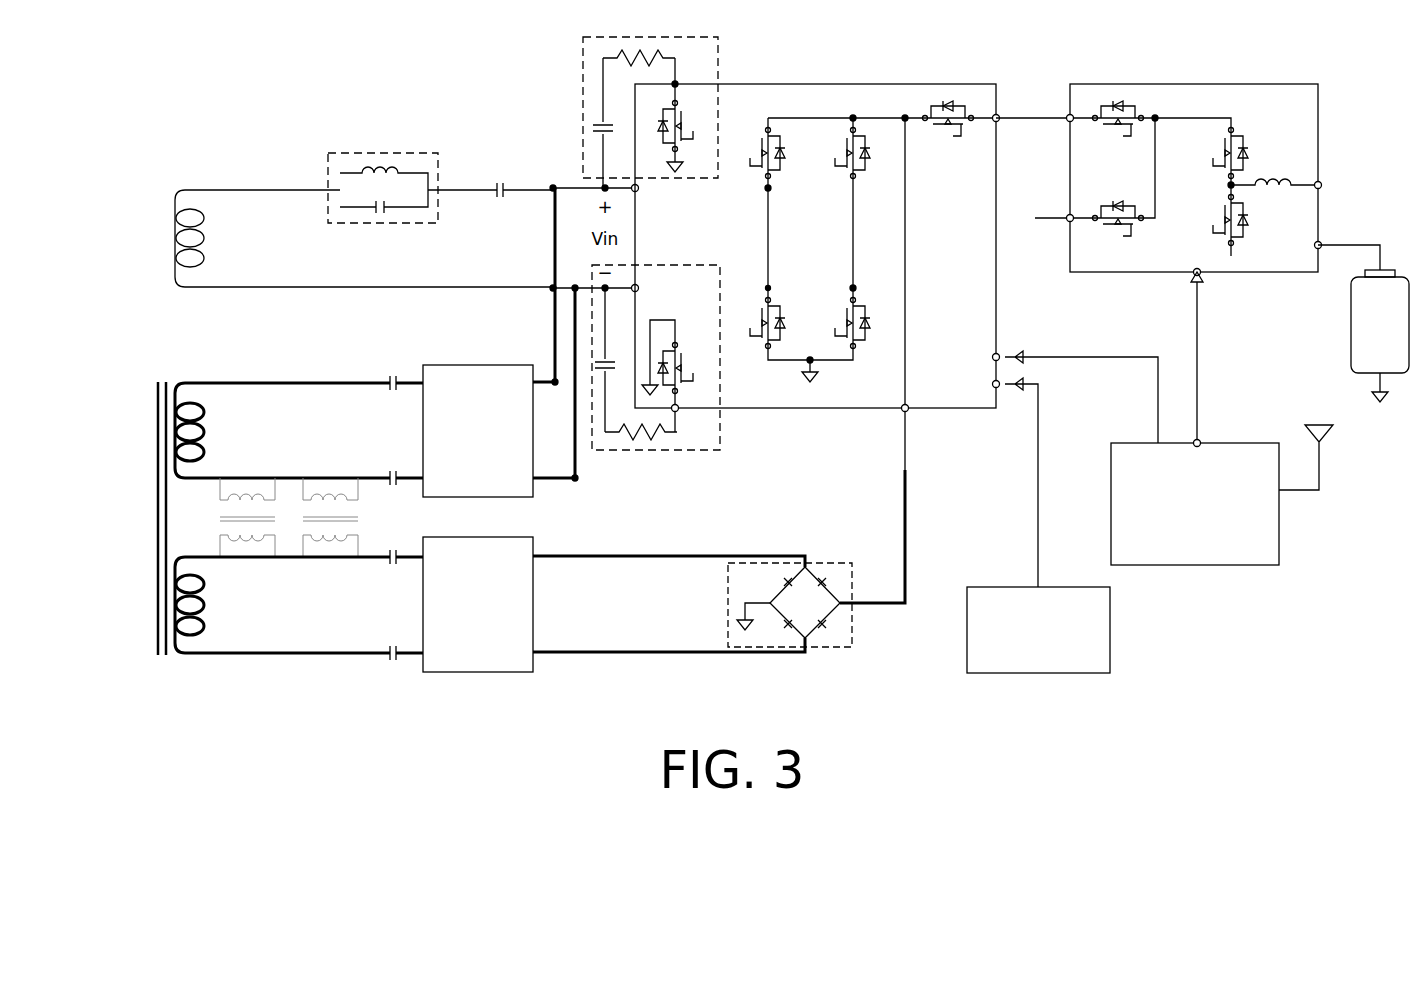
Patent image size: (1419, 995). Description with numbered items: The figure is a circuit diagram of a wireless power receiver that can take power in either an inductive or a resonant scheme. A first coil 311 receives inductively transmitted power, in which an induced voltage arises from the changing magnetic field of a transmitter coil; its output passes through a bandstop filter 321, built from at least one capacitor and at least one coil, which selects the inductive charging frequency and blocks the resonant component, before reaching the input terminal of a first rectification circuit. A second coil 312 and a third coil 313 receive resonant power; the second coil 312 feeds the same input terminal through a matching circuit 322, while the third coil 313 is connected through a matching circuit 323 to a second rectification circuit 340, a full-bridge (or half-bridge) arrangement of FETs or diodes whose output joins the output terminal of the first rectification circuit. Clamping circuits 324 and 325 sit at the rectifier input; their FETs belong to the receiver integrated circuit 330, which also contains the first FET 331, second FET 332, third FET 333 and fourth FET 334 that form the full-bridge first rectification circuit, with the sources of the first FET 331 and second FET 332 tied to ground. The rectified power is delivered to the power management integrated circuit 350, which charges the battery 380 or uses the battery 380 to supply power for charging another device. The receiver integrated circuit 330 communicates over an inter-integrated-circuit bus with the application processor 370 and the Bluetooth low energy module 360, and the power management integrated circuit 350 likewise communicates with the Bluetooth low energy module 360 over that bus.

The first coil 311 is at (207, 237).
The second coil 312 is at (207, 430).
The third coil 313 is at (207, 605).
The bandstop filter 321 is at (391, 153).
The matching circuit 322 is at (483, 365).
The matching circuit 323 is at (483, 672).
The clamping circuit 324 is at (583, 80).
The clamping circuit 325 is at (657, 450).
The receiver integrated circuit (RXIC) 330 is at (952, 84).
The first FET 331 is at (762, 354).
The second FET 332 is at (859, 354).
The third FET 333 is at (783, 178).
The fourth FET 334 is at (868, 178).
The second rectification circuit 340 is at (728, 611).
The power management integrated circuit (PMIC) 350 is at (1268, 84).
The Bluetooth low energy (BLE) module 360 is at (1240, 443).
The application processor (AP) 370 is at (1075, 587).
The battery 380 is at (1351, 330).